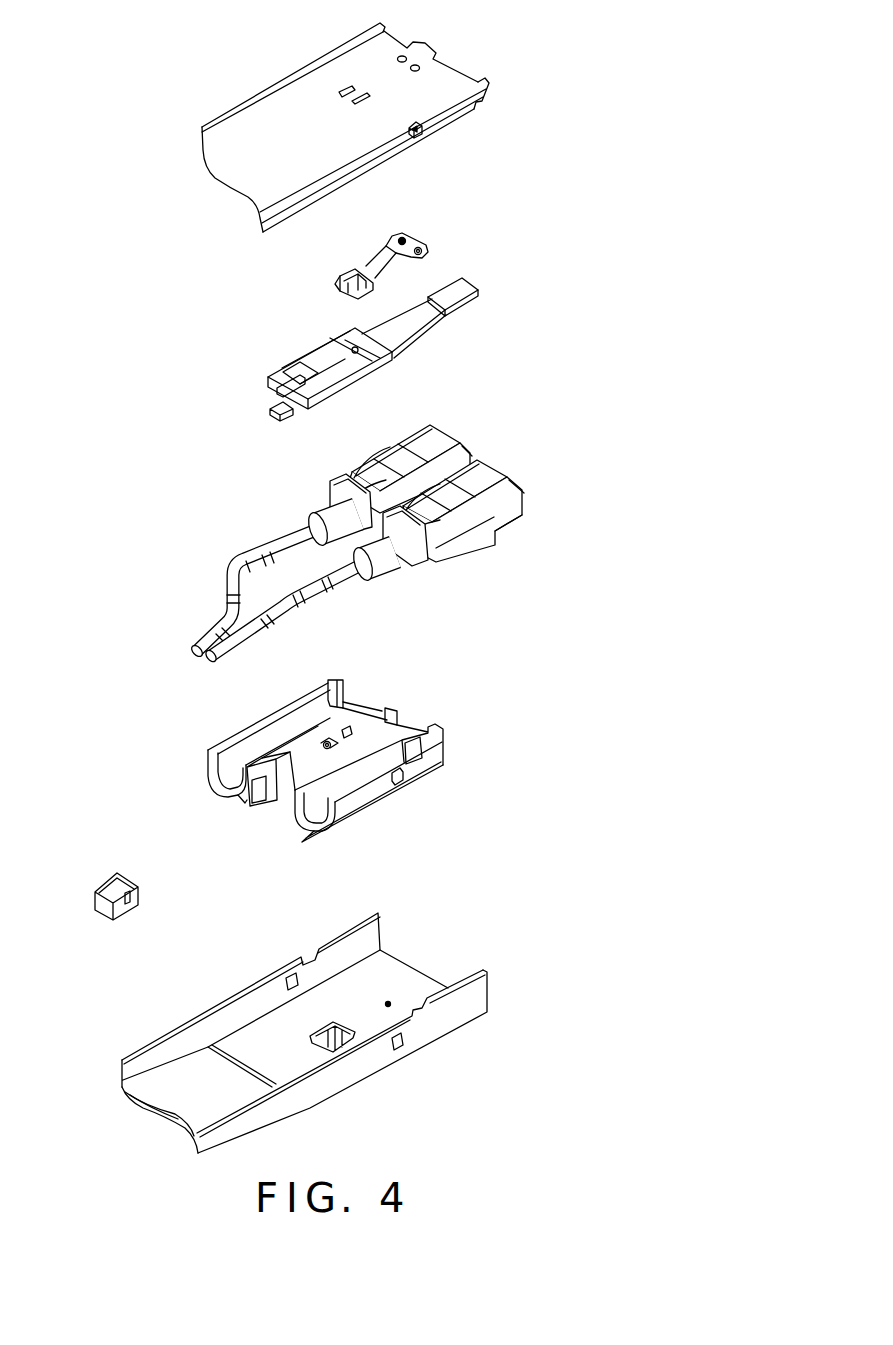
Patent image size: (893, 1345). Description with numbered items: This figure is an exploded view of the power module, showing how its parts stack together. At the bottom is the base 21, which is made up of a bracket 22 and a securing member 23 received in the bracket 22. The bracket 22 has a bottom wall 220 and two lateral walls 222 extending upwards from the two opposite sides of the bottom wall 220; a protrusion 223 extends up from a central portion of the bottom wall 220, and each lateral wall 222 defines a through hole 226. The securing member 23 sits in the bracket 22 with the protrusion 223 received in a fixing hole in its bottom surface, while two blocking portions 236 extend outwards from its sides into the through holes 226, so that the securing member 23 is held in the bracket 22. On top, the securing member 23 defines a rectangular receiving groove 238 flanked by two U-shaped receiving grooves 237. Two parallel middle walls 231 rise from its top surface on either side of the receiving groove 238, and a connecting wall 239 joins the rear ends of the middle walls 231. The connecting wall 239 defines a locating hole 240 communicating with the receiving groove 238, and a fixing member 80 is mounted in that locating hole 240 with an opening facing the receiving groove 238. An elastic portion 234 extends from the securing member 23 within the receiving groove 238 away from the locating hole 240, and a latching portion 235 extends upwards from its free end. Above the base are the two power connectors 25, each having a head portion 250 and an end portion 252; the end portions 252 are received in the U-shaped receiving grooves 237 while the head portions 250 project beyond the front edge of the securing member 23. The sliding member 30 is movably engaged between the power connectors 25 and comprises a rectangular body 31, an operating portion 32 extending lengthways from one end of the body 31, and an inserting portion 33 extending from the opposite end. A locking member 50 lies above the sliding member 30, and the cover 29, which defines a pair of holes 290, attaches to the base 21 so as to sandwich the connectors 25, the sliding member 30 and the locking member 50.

The base 21 is at (529, 797).
The bracket 22 is at (346, 1006).
The bottom wall 220 is at (420, 988).
The lateral walls 222 is at (472, 995).
The protrusion 223 is at (345, 1045).
The through hole 226 is at (400, 1042).
The securing member 23 is at (325, 752).
The middle walls 231 is at (352, 708).
The elastic portion 234 is at (378, 712).
The latching portion 235 is at (327, 743).
The blocking portions 236 is at (403, 777).
The U-shaped receiving grooves 237 is at (318, 783).
The rectangular receiving groove 238 is at (285, 758).
The connecting wall 239 is at (232, 795).
The locating hole 240 is at (257, 802).
The power connectors 25 is at (393, 526).
The head portion 250 is at (428, 437).
The end portion 252 is at (332, 488).
The cover 29 is at (335, 123).
The holes 290 is at (343, 88).
The sliding member 30 is at (378, 338).
The rectangular body 31 is at (323, 352).
The operating portion 32 is at (413, 322).
The inserting portion 33 is at (270, 411).
The locking member 50 is at (413, 237).
The fixing member 80 is at (112, 887).